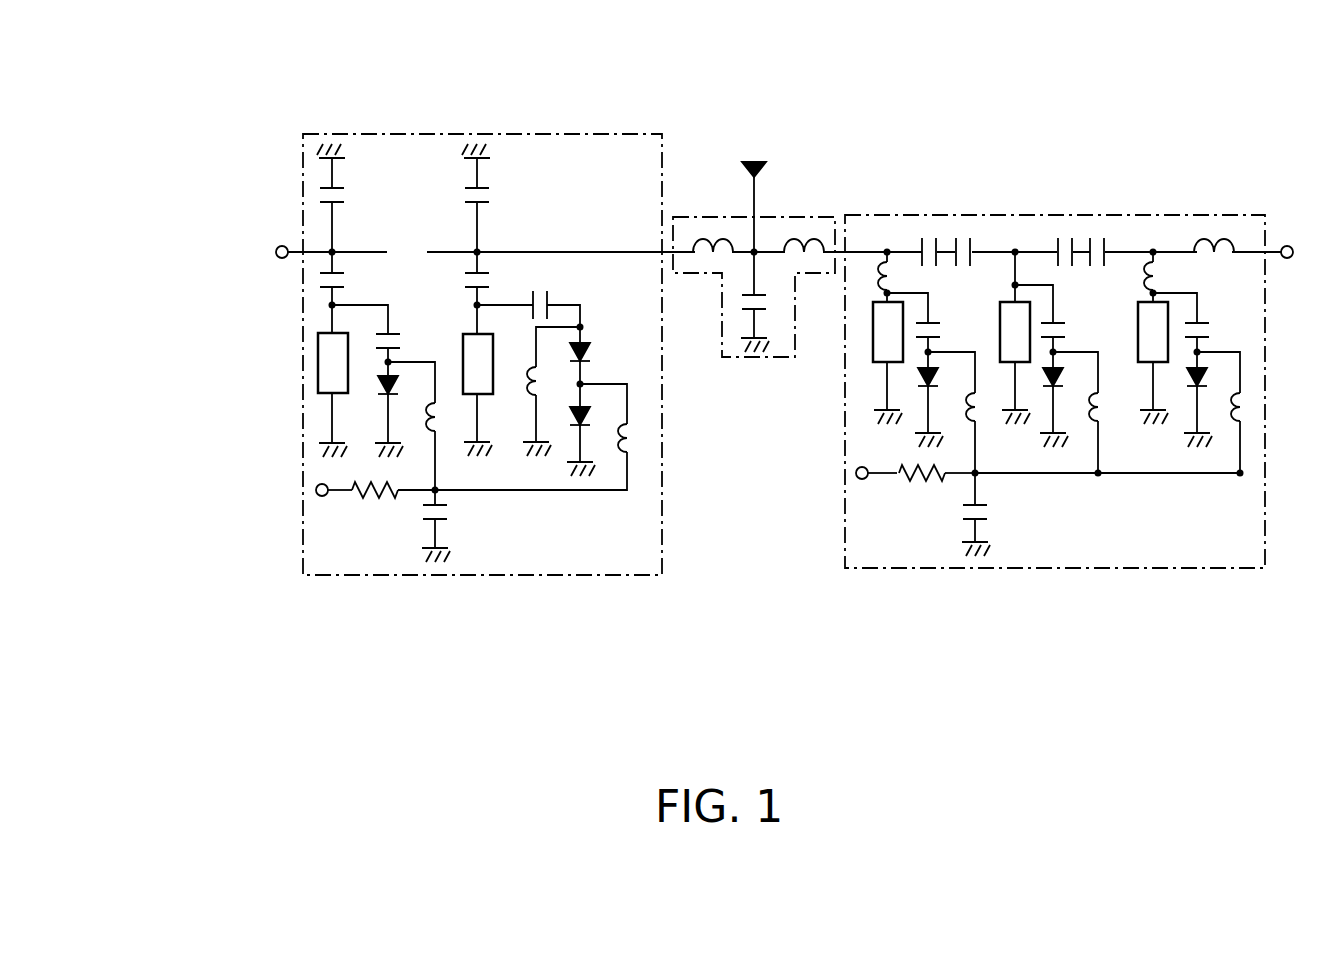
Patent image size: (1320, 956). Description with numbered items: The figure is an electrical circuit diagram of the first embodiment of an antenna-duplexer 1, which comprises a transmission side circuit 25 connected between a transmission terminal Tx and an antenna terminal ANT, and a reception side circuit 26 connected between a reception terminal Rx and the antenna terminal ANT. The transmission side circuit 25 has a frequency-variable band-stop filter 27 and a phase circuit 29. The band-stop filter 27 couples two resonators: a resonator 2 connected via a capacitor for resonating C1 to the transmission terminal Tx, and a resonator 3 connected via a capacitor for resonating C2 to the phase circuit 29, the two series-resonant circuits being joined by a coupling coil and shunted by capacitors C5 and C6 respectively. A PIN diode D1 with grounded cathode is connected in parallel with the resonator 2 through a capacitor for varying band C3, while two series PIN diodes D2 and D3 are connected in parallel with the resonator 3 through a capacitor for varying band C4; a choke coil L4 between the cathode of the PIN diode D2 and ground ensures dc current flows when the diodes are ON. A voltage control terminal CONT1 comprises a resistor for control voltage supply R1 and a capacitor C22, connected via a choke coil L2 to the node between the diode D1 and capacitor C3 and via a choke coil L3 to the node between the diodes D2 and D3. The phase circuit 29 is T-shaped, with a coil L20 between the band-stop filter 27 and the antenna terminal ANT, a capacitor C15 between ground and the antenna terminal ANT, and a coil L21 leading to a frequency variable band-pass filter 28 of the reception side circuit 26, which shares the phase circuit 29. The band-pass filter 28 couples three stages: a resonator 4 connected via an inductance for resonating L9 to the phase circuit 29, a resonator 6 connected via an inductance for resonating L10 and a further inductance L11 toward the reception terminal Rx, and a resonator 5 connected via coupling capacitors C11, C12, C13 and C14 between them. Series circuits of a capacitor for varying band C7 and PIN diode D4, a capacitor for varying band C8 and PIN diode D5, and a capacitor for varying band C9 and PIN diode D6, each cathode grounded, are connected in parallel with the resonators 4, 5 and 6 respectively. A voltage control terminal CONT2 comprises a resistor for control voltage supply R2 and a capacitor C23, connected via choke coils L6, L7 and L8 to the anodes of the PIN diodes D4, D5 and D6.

The antenna-duplexer 1 is at (151, 118).
The resonator 2 is at (348, 378).
The resonator 3 is at (493, 380).
The resonator 4 is at (873, 345).
The resonator 5 is at (998, 320).
The resonator 6 is at (1130, 330).
The transmission side circuit 25 is at (566, 96).
The reception side circuit 26 is at (990, 160).
The frequency-variable band-stop filter 27 is at (405, 132).
The frequency variable band-pass filter 28 is at (1000, 215).
The phase circuit 29 is at (820, 215).
The capacitor for resonating C1 is at (342, 282).
The capacitor for resonating C2 is at (490, 280).
The capacitor for varying band C3 is at (390, 330).
The capacitor for varying band C4 is at (552, 297).
The capacitor C5 is at (344, 194).
The capacitor C6 is at (490, 194).
The capacitor for varying band C7 is at (940, 328).
The capacitor for varying band C8 is at (1065, 330).
The capacitor for varying band C9 is at (1212, 328).
The coupling capacitor C11 is at (918, 246).
The coupling capacitor C12 is at (952, 246).
The coupling capacitor C13 is at (1068, 246).
The coupling capacitor C14 is at (1100, 246).
The capacitor C15 is at (765, 312).
The capacitor C22 is at (425, 515).
The capacitor C23 is at (983, 519).
The choke coil L2 is at (440, 430).
The choke coil L3 is at (633, 455).
The choke coil L4 is at (543, 400).
The choke coil L6 is at (982, 412).
The choke coil L7 is at (1105, 412).
The choke coil L8 is at (1248, 412).
The inductance for resonating L9 is at (898, 270).
The inductance for resonating L10 is at (1165, 270).
The inductor L11 is at (1220, 246).
The coil L20 is at (714, 242).
The coil L21 is at (806, 242).
The PIN diode D1 is at (397, 386).
The PIN diode D2 is at (590, 355).
The PIN diode D3 is at (593, 415).
The PIN diode D4 is at (936, 385).
The PIN diode D5 is at (1060, 385).
The PIN diode D6 is at (1206, 385).
The resistor for control voltage supply R1 is at (363, 498).
The resistor for control voltage supply R2 is at (912, 492).
The antenna terminal ANT is at (757, 160).
The transmission terminal Tx is at (278, 262).
The reception terminal Rx is at (1289, 260).
The voltage control terminal CONT1 is at (318, 484).
The voltage control terminal CONT2 is at (858, 480).